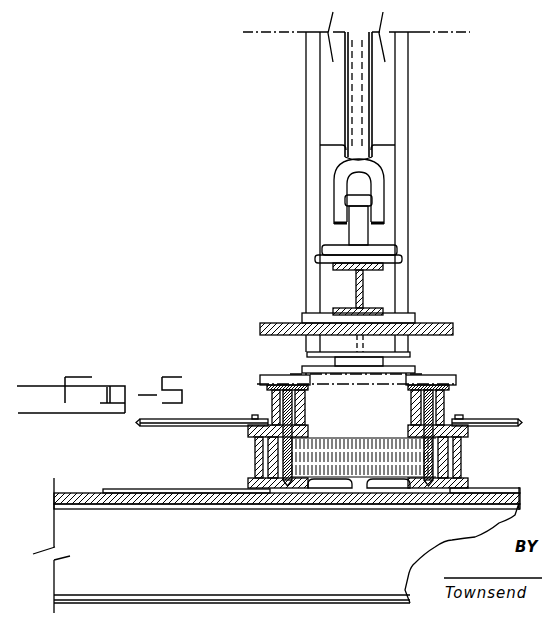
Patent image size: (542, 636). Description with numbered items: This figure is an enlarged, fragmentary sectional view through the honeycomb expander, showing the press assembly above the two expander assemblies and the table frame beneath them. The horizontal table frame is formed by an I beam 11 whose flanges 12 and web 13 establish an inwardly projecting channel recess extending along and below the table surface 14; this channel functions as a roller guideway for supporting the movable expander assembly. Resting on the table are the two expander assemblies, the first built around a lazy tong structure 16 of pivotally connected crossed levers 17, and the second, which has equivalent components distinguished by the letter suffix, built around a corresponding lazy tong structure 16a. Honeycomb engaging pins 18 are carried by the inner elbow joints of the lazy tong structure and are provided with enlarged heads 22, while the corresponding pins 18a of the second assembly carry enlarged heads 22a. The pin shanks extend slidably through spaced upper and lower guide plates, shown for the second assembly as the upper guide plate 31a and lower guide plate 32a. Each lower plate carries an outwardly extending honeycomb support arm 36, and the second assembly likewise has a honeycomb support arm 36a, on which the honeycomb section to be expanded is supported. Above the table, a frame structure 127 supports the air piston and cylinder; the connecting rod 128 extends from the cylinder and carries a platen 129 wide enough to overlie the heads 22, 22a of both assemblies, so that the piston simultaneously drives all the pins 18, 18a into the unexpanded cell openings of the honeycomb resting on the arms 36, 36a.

The frame structure 127 is at (306, 73).
The connecting rod 128 is at (372, 117).
The platen 129 is at (362, 292).
The enlarged head 22 is at (283, 385).
The enlarged head 22a is at (430, 388).
The pin 18 is at (278, 401).
The pin 18a is at (430, 408).
The upper guide plate 31a is at (468, 430).
The lazy tong structure 16 is at (207, 432).
The lazy tong structure 16a is at (493, 483).
The lower guide plate 32a is at (466, 485).
The table surface 14 is at (83, 493).
The crossed lever 17 is at (145, 489).
The I beam 11 is at (68, 528).
The flange 12 is at (201, 509).
The web 13 is at (258, 556).
The honeycomb support arm 36 is at (335, 489).
The honeycomb support arm 36a is at (400, 489).